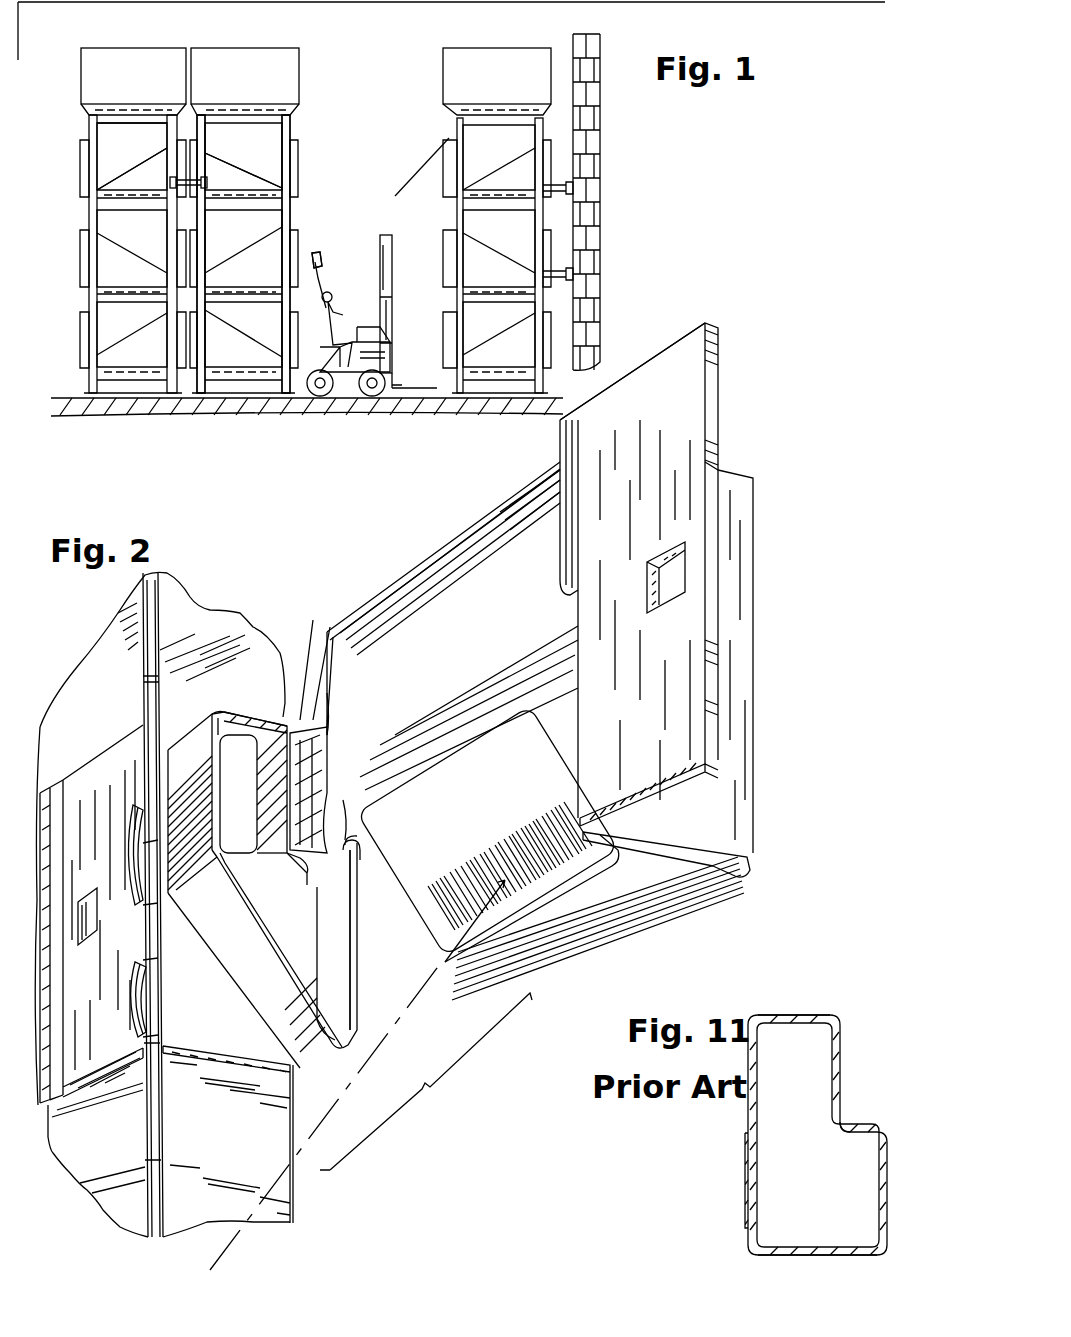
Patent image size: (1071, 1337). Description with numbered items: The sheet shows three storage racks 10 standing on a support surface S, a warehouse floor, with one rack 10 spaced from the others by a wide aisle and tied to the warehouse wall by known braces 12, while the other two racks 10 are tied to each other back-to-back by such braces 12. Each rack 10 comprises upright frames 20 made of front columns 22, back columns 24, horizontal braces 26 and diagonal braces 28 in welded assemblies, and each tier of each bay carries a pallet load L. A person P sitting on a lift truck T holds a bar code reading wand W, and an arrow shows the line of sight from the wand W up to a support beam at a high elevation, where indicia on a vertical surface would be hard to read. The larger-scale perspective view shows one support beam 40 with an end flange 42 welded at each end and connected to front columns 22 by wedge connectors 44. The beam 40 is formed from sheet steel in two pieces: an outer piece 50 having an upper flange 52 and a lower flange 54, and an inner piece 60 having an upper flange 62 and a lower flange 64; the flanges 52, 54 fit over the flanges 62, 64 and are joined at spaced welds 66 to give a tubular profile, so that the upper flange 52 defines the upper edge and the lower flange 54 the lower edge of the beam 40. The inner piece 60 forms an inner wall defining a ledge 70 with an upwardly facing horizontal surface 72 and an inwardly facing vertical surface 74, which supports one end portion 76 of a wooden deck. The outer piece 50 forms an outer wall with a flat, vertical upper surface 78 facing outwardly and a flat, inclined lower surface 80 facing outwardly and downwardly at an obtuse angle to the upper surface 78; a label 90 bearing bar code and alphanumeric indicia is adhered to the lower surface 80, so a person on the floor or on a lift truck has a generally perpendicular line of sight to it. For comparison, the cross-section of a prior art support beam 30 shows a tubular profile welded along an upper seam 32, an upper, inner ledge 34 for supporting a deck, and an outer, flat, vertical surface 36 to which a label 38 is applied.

In FIG. 1, the storage rack 10 is at (68, 112).
In FIG. 1, the brace 12 is at (190, 190).
In FIG. 1, the upright frame 20 is at (90, 210).
In FIG. 1, the front column 22 is at (90, 217).
In FIG. 2, the front column 22 is at (270, 663).
In FIG. 1, the back column 24 is at (167, 127).
In FIG. 1, the horizontal brace 26 is at (128, 120).
In FIG. 1, the diagonal brace 28 is at (104, 193).
In FIG. 1, the pallet load L is at (167, 60).
In FIG. 1, the bar code reading wand W is at (334, 264).
In FIG. 1, the person P is at (334, 261).
In FIG. 1, the lift truck T is at (372, 340).
In FIG. 1, the support surface S is at (301, 396).
In FIG. 2, the support beam 40 is at (433, 526).
In FIG. 2, the end flange 42 is at (110, 760).
In FIG. 2, the wedge connector 44 is at (148, 843).
In FIG. 2, the outer piece 50 is at (219, 794).
In FIG. 2, the upper flange 52 is at (232, 713).
In FIG. 2, the lower flange 54 is at (317, 1072).
In FIG. 2, the inner piece 60 is at (272, 817).
In FIG. 2, the upper flange 62 is at (243, 740).
In FIG. 2, the lower flange 64 is at (342, 977).
In FIG. 2, the weld 66 is at (300, 710).
In FIG. 2, the ledge 70 is at (358, 763).
In FIG. 2, the horizontal surface 72 is at (318, 855).
In FIG. 2, the vertical surface 74 is at (343, 800).
In FIG. 2, the end portion 76 is at (327, 693).
In FIG. 2, the upper surface 78 is at (200, 797).
In FIG. 2, the lower surface 80 is at (228, 934).
In FIG. 2, the label 90 is at (507, 723).
In FIG. 11, the support beam 30 is at (736, 1128).
In FIG. 11, the upper seam 32 is at (835, 1015).
In FIG. 11, the upper, inner ledge 34 is at (863, 1122).
In FIG. 11, the outer vertical surface 36 is at (750, 1238).
In FIG. 11, the label 38 is at (745, 1208).